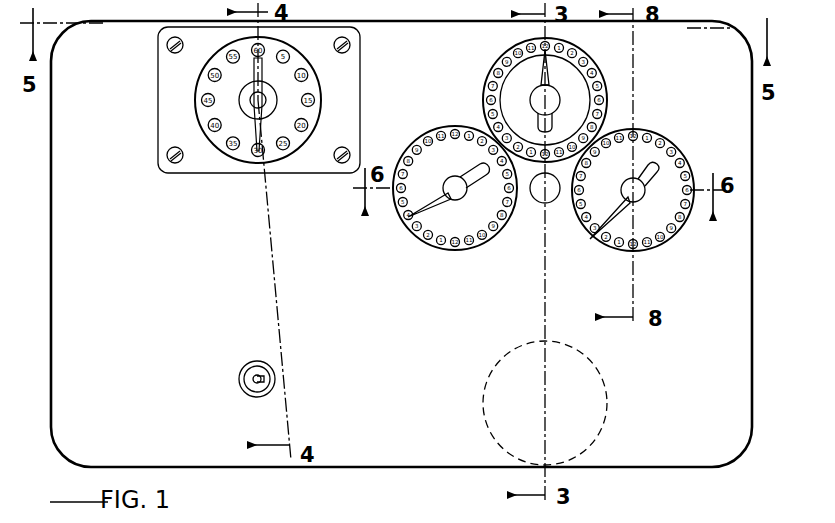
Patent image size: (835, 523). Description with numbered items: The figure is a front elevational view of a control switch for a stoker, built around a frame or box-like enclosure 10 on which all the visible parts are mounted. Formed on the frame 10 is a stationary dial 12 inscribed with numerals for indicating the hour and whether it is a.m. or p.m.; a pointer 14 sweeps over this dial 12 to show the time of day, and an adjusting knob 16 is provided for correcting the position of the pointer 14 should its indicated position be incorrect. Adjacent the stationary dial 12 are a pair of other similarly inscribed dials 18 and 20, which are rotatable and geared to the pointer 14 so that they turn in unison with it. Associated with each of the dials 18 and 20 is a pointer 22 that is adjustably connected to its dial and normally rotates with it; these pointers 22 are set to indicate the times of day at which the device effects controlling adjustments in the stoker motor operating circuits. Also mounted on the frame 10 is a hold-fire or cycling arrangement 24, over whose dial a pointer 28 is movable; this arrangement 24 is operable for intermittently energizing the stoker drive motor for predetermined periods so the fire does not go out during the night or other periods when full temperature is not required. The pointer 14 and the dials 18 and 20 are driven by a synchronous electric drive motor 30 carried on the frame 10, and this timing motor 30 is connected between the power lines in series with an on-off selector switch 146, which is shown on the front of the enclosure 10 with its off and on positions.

The frame or box like enclosure 10 is at (738, 347).
The dial 12 is at (605, 82).
The pointer 14 is at (549, 72).
The adjusting knob 16 is at (545, 205).
The dial 18 is at (458, 250).
The dial 20 is at (640, 250).
The pointer 22 is at (437, 203).
The hold-fire or cycling arrangement 24 is at (358, 58).
The pointer 28 is at (266, 128).
The synchronous electric drive motor 30 is at (600, 381).
The on-off selector switch 146 is at (259, 362).